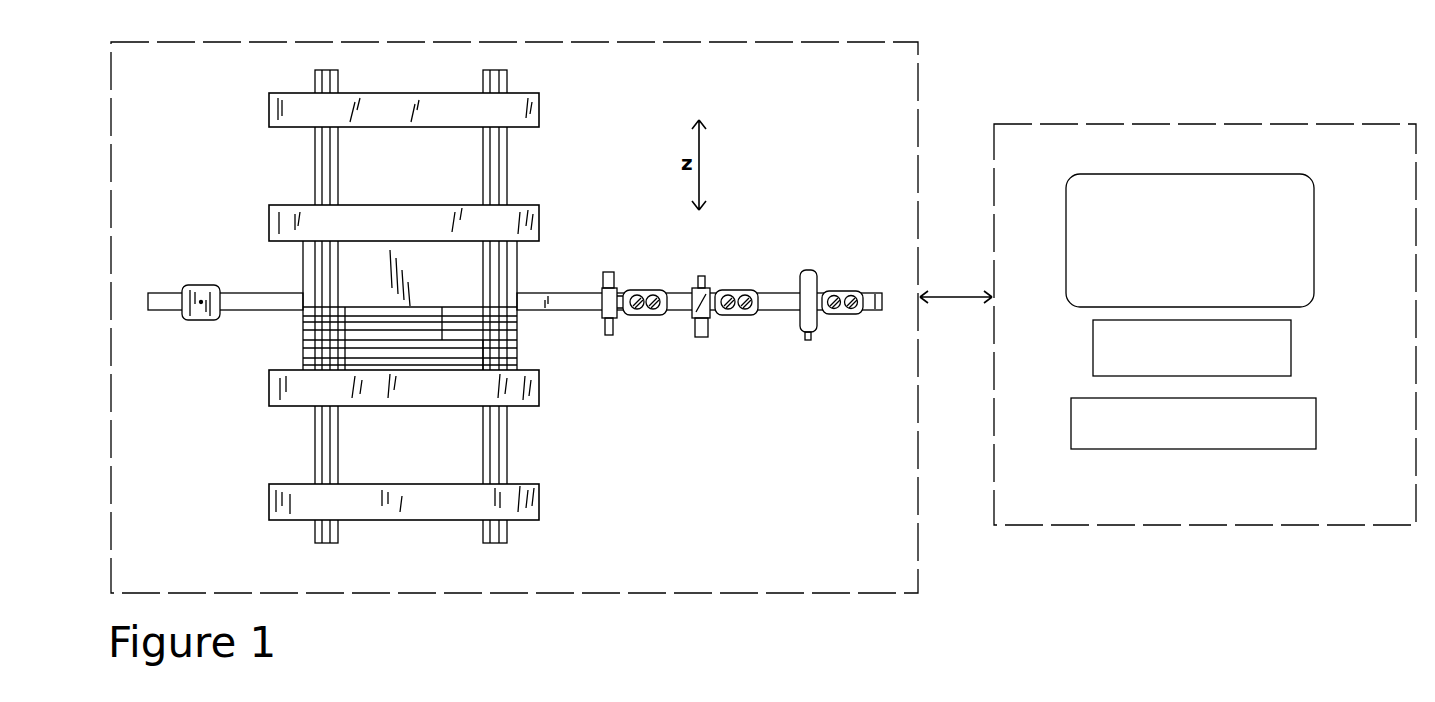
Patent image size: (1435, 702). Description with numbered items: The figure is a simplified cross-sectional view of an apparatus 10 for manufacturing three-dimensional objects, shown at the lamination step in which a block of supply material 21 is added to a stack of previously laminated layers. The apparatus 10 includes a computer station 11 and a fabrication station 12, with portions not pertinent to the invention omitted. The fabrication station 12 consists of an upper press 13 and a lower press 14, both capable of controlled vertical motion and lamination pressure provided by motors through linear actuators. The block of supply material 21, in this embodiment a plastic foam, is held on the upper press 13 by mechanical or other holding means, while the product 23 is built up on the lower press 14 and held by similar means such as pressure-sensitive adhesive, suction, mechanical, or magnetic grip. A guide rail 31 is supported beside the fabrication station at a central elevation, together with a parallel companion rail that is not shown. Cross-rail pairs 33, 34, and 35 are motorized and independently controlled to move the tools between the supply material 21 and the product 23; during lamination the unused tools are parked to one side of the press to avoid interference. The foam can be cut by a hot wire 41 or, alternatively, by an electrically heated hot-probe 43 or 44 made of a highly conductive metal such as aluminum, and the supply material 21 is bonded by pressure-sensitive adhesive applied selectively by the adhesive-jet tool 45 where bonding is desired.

The apparatus 10 is at (1377, 54).
The computer station 11 is at (1040, 517).
The fabrication station 12 is at (150, 584).
The upper press 13 is at (280, 207).
The lower press 14 is at (296, 390).
The supply material 21 is at (327, 277).
The product 23 is at (318, 334).
The guide rail 31 is at (535, 300).
The cross-rail pair 33 is at (635, 295).
The cross-rail pair 34 is at (726, 295).
The cross-rail pair 35 is at (832, 295).
The hot wire 41 is at (202, 295).
The hot-probe 43 is at (612, 335).
The hot-probe 44 is at (705, 338).
The adhesive-jet tool 45 is at (805, 342).